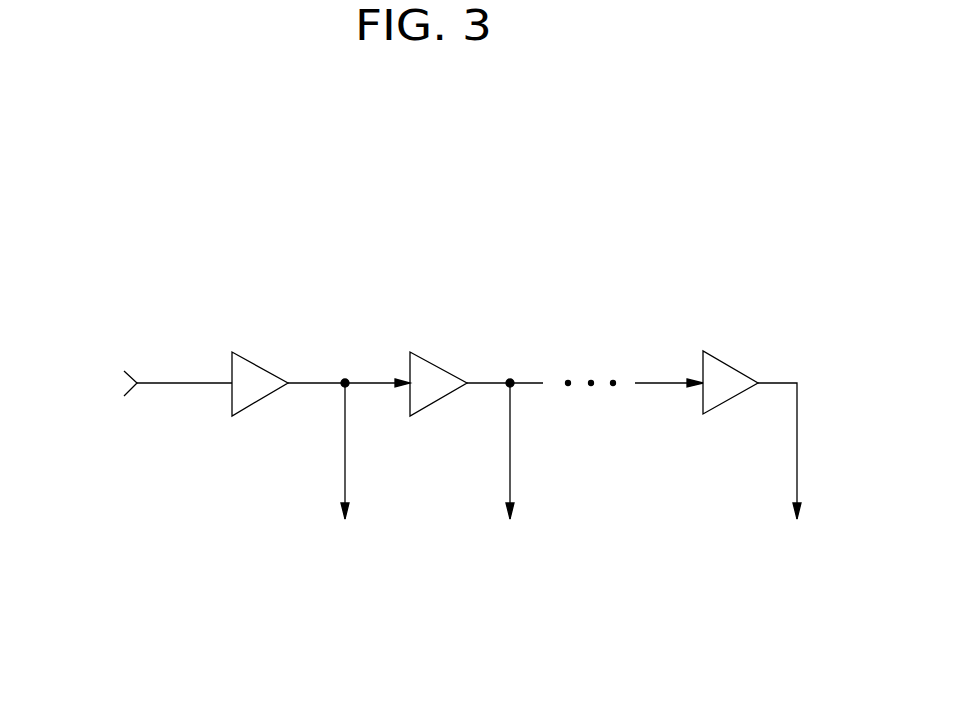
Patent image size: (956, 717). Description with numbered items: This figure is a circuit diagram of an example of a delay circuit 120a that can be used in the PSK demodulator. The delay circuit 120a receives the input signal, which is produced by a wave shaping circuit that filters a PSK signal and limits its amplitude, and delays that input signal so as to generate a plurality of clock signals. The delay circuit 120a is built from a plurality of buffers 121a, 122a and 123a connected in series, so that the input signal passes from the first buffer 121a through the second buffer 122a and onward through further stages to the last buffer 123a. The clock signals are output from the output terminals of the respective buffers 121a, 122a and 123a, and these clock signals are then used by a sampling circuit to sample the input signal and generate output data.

The delay circuit 120a is at (522, 206).
The buffer 121a is at (257, 363).
The buffer 122a is at (437, 362).
The buffer 123a is at (732, 362).